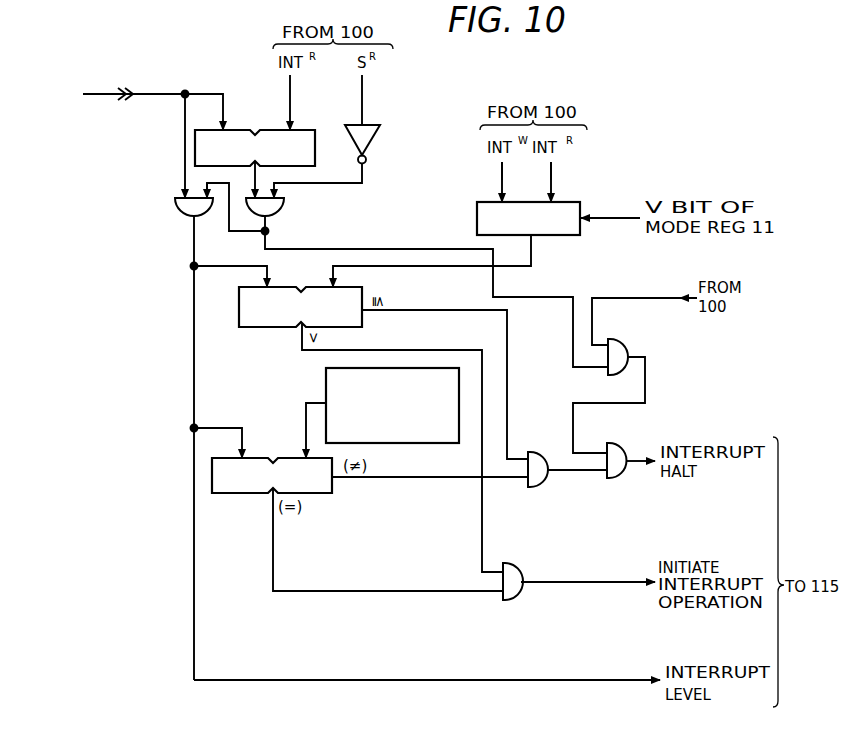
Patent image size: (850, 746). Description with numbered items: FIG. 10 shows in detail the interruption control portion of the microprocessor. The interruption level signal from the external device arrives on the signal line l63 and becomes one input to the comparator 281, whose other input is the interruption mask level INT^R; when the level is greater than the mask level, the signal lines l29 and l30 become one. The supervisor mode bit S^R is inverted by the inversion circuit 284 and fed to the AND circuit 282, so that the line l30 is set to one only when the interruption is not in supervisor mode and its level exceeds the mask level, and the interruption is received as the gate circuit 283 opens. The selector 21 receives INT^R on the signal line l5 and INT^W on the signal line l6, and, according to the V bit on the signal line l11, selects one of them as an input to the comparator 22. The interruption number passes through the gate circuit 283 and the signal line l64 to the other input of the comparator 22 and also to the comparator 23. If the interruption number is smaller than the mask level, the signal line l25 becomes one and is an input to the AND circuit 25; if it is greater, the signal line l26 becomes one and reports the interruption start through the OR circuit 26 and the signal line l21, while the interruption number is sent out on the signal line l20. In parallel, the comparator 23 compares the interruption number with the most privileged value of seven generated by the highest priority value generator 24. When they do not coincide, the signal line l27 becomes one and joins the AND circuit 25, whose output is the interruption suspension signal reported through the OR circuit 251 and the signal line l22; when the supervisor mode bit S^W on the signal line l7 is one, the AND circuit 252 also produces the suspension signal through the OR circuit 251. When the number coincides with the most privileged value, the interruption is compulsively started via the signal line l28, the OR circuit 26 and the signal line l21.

The signal line l63 is at (108, 92).
The comparator 281 is at (316, 138).
The inversion circuit 284 is at (378, 127).
The gate circuit 283 is at (177, 206).
The AND circuit 282 is at (284, 213).
The signal line l29 is at (245, 178).
The signal line l30 is at (269, 231).
The selector 21 is at (477, 220).
The signal line l6 is at (500, 178).
The signal line l5 is at (553, 177).
The signal line l11 is at (617, 221).
The signal line l7 is at (650, 297).
The signal line l64 is at (193, 243).
The comparator 22 is at (239, 293).
The signal line l25 is at (507, 327).
The signal line l26 is at (387, 350).
The highest priority value generator 24 is at (326, 384).
The comparator 23 is at (242, 494).
The signal line l27 is at (388, 479).
The signal line l28 is at (312, 593).
The AND circuit 25 is at (537, 451).
The AND circuit 252 is at (630, 346).
The OR circuit 251 is at (617, 480).
The signal line l22 is at (641, 461).
The OR circuit 26 is at (521, 567).
The signal line l21 is at (603, 581).
The signal line l20 is at (560, 679).